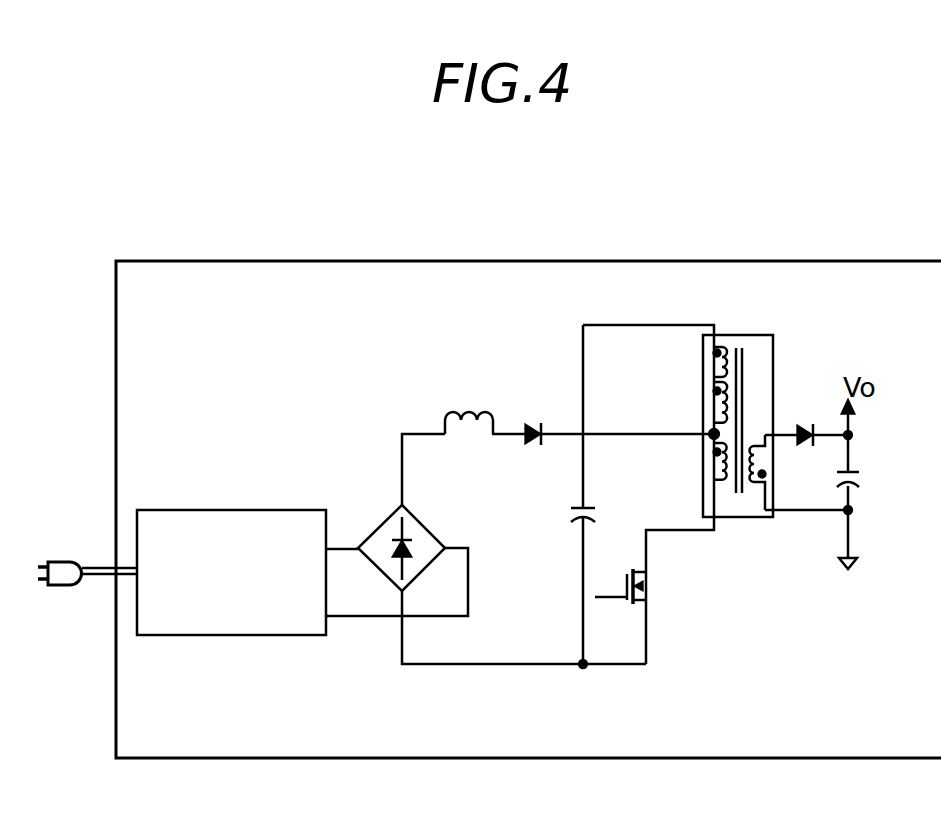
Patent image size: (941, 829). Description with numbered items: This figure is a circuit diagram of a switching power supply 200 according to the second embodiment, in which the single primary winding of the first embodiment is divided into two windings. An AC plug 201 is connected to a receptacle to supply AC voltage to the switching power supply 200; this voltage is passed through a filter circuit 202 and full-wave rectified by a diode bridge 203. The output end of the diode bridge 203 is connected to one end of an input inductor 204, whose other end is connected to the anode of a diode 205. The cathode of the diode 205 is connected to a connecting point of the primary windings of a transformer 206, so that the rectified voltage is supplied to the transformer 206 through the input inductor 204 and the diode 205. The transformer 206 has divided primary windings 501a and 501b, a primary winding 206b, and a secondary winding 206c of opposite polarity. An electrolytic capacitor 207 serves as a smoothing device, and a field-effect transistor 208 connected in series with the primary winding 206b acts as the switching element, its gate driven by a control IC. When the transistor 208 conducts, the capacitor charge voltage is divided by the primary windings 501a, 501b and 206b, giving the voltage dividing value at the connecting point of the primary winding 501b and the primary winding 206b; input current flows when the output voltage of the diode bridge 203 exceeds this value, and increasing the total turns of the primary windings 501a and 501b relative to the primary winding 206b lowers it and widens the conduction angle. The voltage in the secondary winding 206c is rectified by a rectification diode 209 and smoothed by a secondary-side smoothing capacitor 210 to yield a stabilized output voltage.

The switching power supply 200 is at (487, 260).
The AC plug 201 is at (73, 593).
The filter circuit 202 is at (240, 642).
The diode bridge 203 is at (437, 520).
The input inductor 204 is at (467, 410).
The diode 205 is at (530, 420).
The transformer 206 is at (710, 473).
The primary winding 206b is at (718, 463).
The secondary winding 206c is at (755, 488).
The electrolytic capacitor 207 is at (642, 482).
The field-effect transistor 208 is at (652, 595).
The rectification diode 209 is at (800, 422).
The secondary-side smoothing capacitor 210 is at (868, 477).
The primary winding 501a is at (712, 363).
The primary winding 501b is at (712, 407).